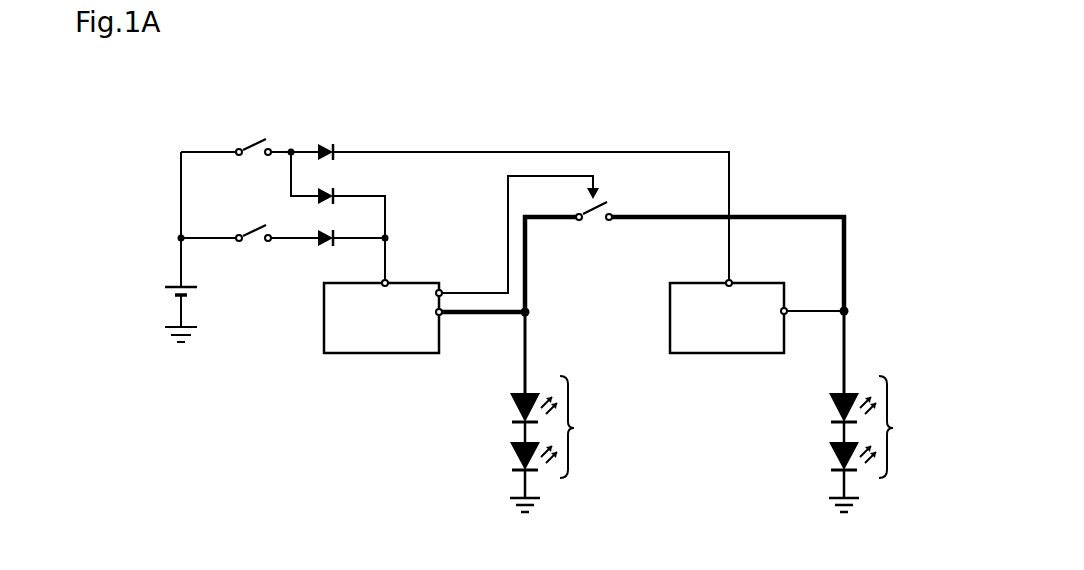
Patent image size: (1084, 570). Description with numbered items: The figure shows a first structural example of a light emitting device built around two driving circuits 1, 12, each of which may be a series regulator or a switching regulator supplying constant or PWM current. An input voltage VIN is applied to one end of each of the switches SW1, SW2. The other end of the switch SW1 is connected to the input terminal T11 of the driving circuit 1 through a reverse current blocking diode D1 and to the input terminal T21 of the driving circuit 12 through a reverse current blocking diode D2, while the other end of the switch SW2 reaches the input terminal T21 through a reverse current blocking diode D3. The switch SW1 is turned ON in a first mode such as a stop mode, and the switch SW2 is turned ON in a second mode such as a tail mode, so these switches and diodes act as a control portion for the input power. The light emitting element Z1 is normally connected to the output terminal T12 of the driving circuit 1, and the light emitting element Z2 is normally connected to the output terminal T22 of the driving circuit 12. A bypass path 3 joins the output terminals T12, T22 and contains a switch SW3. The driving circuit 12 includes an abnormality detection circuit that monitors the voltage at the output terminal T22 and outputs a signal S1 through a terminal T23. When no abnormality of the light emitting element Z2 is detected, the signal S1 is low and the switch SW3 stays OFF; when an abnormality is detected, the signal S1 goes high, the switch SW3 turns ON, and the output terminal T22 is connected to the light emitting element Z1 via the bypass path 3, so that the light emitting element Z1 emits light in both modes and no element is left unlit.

The driving circuit 1 is at (766, 282).
The bypass path 3 is at (766, 216).
The driving circuit 12 is at (421, 282).
The switch SW1 is at (253, 138).
The switch SW2 is at (253, 224).
The switch SW3 is at (595, 224).
The reverse current blocking diode D1 is at (331, 141).
The reverse current blocking diode D2 is at (331, 184).
The reverse current blocking diode D3 is at (331, 224).
The input terminal T11 is at (728, 280).
The output terminal T12 is at (788, 316).
The input terminal T21 is at (383, 280).
The output terminal T22 is at (443, 316).
The terminal T23 is at (443, 290).
The signal S1 is at (520, 234).
The input voltage VIN is at (171, 302).
The light emitting element Z1 is at (875, 411).
The light emitting element Z2 is at (557, 412).